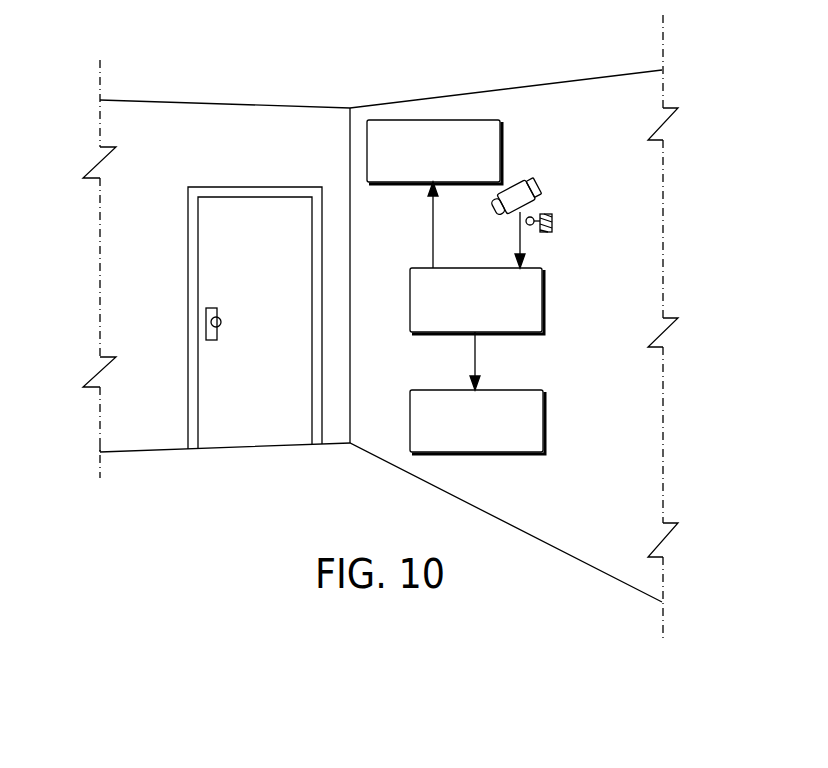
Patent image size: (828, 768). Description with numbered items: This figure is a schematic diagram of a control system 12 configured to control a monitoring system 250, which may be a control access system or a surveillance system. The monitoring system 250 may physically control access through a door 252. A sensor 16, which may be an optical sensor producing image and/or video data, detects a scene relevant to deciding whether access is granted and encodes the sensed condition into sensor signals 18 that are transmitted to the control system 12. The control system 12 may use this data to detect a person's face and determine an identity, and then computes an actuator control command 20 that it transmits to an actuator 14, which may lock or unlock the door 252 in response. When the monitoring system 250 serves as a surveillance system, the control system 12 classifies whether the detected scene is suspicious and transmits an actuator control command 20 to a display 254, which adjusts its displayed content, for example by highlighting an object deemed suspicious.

The monitoring system 250 is at (537, 53).
The door 252 is at (286, 364).
The actuator 14 is at (500, 152).
The sensor 16 is at (545, 195).
The sensor signals 18 is at (518, 238).
The actuator control command 20 is at (433, 222).
The control system 12 is at (542, 300).
The display 254 is at (543, 420).